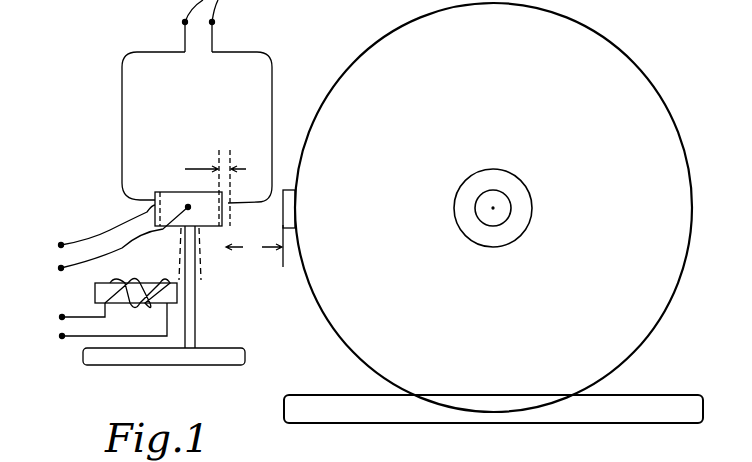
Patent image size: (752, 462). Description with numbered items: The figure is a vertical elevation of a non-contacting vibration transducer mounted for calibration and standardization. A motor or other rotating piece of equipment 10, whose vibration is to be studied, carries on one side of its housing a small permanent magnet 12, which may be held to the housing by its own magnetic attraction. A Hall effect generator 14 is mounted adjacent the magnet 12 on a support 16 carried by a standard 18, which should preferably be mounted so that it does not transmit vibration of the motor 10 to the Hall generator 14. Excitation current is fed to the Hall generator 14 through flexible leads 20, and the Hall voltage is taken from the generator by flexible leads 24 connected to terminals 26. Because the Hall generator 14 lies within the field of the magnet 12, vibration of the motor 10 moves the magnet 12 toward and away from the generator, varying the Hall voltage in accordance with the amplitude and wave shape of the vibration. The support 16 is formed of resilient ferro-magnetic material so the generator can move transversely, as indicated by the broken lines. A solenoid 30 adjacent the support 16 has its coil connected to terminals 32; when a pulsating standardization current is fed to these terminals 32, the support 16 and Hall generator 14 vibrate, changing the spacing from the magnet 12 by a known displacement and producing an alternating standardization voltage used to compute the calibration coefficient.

The motor 10 is at (628, 58).
The permanent magnet 12 is at (292, 218).
The Hall effect generator 14 is at (173, 193).
The support 16 is at (195, 298).
The standard 18 is at (170, 355).
The flexible leads 20 is at (125, 99).
The flexible leads 24 is at (118, 248).
The terminals 26 is at (61, 245).
The solenoid 30 is at (133, 281).
The terminals 32 is at (62, 317).